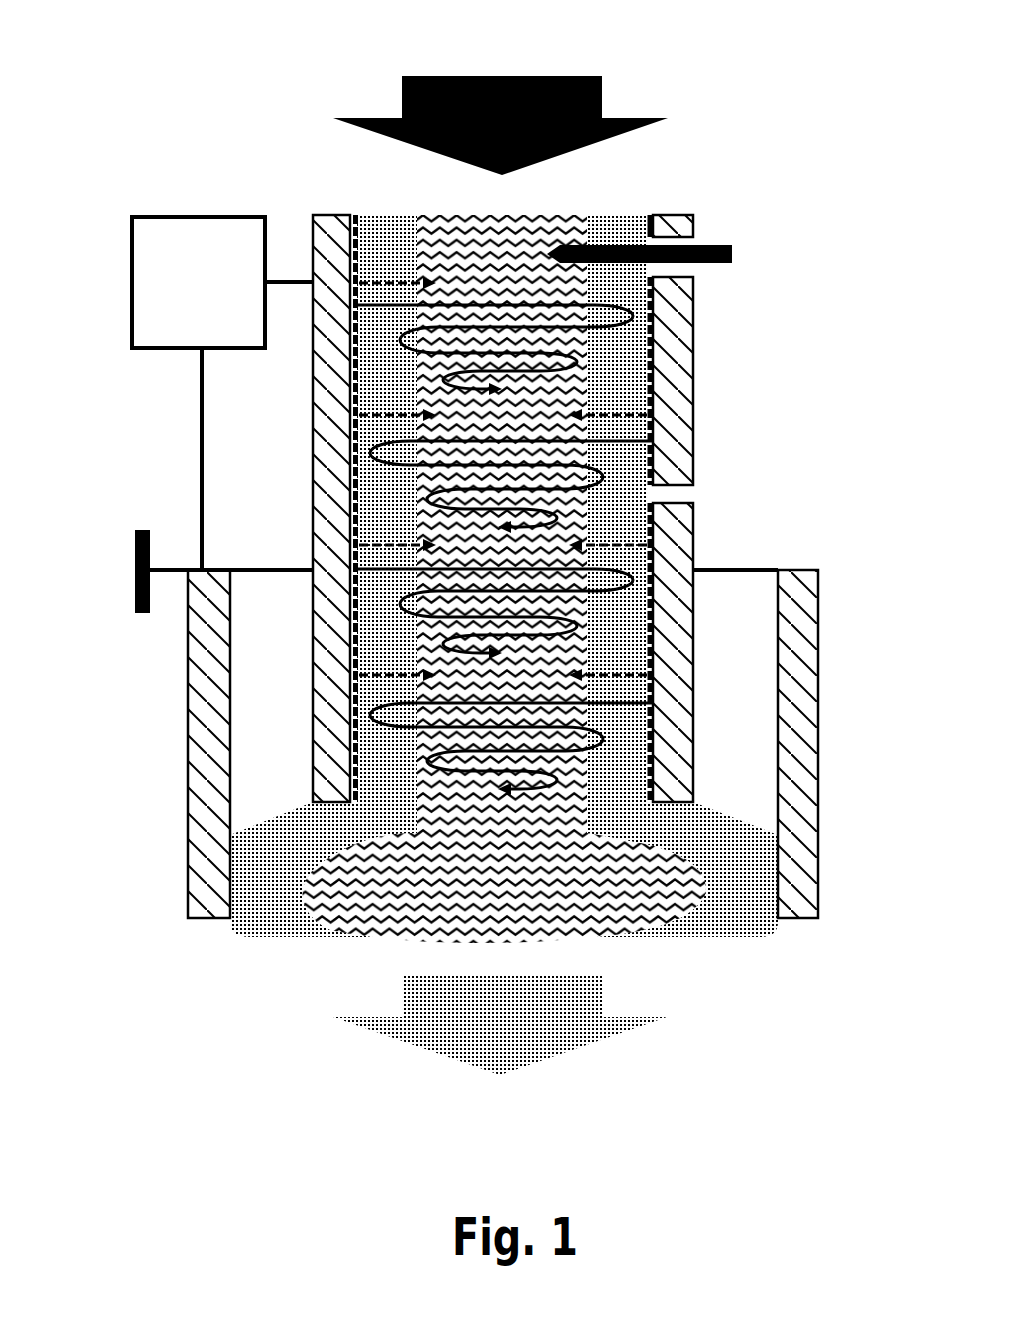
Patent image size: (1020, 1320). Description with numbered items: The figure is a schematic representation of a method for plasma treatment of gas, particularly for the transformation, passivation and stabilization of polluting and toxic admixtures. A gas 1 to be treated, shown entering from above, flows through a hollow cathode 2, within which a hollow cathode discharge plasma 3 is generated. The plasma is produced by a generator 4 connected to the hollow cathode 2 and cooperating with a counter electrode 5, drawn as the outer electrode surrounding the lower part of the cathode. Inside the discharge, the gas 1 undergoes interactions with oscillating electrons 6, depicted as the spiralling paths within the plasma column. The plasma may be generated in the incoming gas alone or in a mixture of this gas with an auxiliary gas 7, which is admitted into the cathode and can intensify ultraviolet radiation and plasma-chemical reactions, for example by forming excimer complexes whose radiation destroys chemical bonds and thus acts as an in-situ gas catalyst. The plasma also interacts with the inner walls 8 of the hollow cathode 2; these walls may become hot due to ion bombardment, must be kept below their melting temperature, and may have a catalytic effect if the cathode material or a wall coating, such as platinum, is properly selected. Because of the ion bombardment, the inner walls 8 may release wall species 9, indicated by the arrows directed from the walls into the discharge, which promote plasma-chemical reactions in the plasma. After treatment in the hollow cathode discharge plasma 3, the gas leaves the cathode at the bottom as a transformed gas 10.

The gas 1 is at (505, 80).
The hollow cathode 2 is at (683, 382).
The hollow cathode discharge plasma 3 is at (617, 800).
The generator 4 is at (187, 225).
The counter electrode 5 is at (188, 747).
The oscillating electrons 6 is at (602, 477).
The auxiliary gas 7 is at (732, 257).
The inner walls 8 is at (357, 237).
The wall species 9 is at (382, 548).
The transformed gas 10 is at (560, 1032).